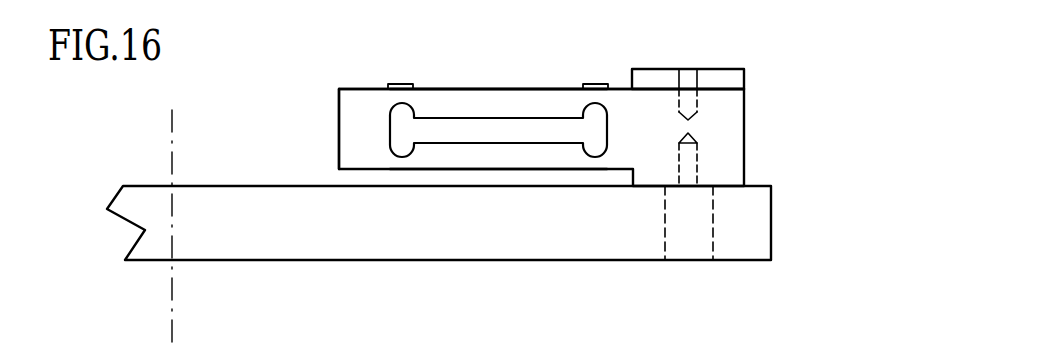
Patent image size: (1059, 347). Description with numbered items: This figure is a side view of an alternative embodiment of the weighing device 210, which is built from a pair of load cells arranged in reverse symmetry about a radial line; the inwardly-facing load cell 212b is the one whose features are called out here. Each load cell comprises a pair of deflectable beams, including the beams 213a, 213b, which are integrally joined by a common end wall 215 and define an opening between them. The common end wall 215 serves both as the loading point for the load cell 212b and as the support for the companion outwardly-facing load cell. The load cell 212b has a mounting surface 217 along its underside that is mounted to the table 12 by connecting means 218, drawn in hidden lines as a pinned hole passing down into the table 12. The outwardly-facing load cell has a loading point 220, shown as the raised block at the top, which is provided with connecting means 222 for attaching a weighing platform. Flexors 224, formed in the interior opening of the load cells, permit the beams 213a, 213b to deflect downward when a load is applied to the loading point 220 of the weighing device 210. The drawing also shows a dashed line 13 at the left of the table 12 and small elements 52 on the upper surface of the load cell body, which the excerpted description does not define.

The table 12 is at (772, 212).
The center line / axis 13 is at (170, 132).
The strain gauge 52 is at (405, 83).
The weighing device 210 is at (753, 102).
The load cell 212b is at (502, 88).
The deflectable beam 213a is at (473, 100).
The deflectable beam 213b is at (498, 152).
The common end wall 215 is at (353, 130).
The mounting surface 217 is at (727, 183).
The connecting means 218 is at (690, 153).
The loading point 220 is at (730, 70).
The connecting means 222 is at (687, 78).
The flexors 224 is at (402, 112).